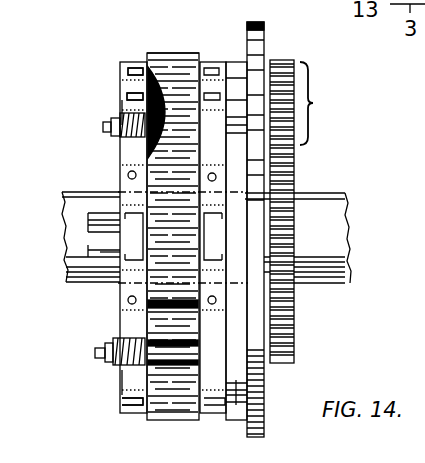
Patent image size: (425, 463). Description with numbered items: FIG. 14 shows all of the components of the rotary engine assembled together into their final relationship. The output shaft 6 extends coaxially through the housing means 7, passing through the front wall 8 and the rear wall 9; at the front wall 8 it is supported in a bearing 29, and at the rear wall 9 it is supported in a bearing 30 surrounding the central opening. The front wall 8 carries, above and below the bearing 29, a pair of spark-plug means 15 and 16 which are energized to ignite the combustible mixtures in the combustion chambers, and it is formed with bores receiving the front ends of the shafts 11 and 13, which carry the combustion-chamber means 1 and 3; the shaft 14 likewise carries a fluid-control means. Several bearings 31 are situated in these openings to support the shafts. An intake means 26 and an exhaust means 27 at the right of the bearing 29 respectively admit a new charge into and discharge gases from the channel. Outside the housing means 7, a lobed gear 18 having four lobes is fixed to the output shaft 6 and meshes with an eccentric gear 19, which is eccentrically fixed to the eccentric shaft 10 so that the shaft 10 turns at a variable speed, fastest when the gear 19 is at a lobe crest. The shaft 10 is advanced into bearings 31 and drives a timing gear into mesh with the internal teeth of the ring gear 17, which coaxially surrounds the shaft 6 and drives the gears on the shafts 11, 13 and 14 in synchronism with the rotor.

The combustion-chamber means 1 is at (196, 57).
The combustion-chamber means 3 is at (162, 410).
The output shaft 6 is at (329, 222).
The housing means 7 is at (205, 8).
The front wall 8 is at (143, 415).
The rear wall 9 is at (200, 415).
The eccentric shaft 10 is at (127, 107).
The shaft 11 is at (244, 90).
The shaft 13 is at (238, 383).
The shaft 14 is at (239, 233).
The spark-plug means 15 is at (113, 121).
The spark-plug means 16 is at (100, 353).
The internal ring gear 17 is at (254, 368).
The lobed gear 18 is at (284, 333).
The eccentric gear 19 is at (327, 103).
The intake means 26 is at (102, 253).
The exhaust means 27 is at (98, 213).
The bearing 29 is at (128, 303).
The bearing 30 is at (216, 303).
The bearings 31 is at (118, 404).